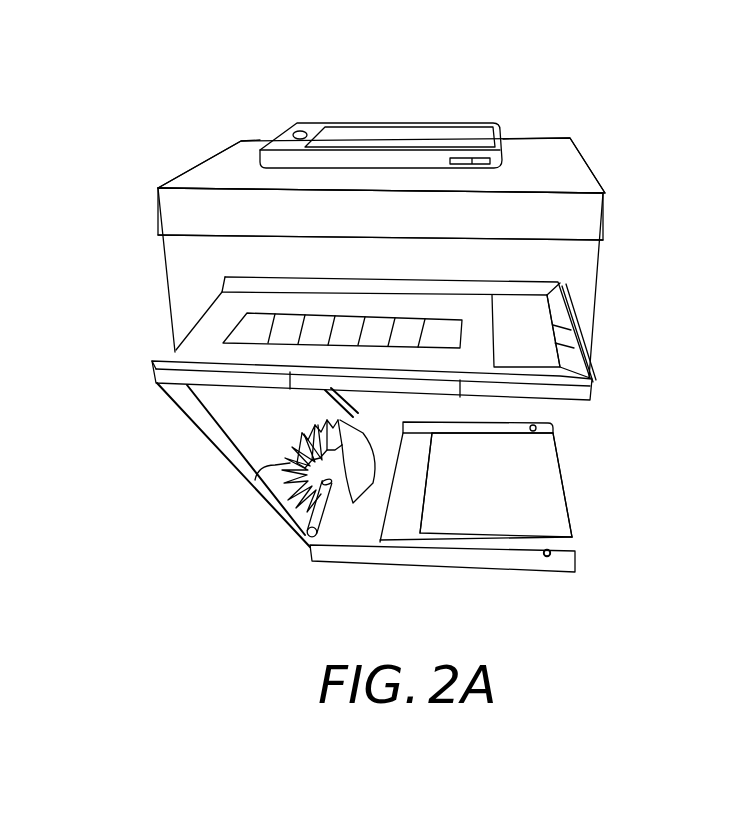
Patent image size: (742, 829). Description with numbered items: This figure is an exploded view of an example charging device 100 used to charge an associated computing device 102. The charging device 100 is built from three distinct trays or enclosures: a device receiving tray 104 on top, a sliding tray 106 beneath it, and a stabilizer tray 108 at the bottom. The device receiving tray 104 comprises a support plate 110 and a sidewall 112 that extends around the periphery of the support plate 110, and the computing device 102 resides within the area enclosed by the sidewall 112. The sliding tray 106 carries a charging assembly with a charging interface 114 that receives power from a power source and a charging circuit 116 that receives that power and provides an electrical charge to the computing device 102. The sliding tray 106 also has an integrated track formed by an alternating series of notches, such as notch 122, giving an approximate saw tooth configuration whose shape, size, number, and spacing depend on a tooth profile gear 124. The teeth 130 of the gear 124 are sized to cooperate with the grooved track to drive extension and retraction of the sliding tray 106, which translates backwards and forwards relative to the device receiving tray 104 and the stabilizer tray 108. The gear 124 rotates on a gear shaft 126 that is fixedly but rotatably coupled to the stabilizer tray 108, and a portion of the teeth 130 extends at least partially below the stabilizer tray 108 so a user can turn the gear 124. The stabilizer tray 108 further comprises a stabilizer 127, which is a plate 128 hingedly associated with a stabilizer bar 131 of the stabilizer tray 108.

The charging device 100 is at (312, 63).
The computing device 102 is at (445, 135).
The device receiving tray 104 is at (595, 120).
The sliding tray 106 is at (613, 363).
The stabilizer tray 108 is at (608, 512).
The support plate 110 is at (565, 177).
The sidewall 112 is at (519, 230).
The charging interface 114 is at (563, 340).
The charging circuit 116 is at (537, 318).
The notch 122 is at (242, 332).
The gear 124 is at (262, 467).
The gear shaft 126 is at (318, 528).
The stabilizer 127 is at (477, 518).
The plate 128 is at (497, 491).
The teeth 130 is at (312, 427).
The stabilizer bar 131 is at (547, 553).